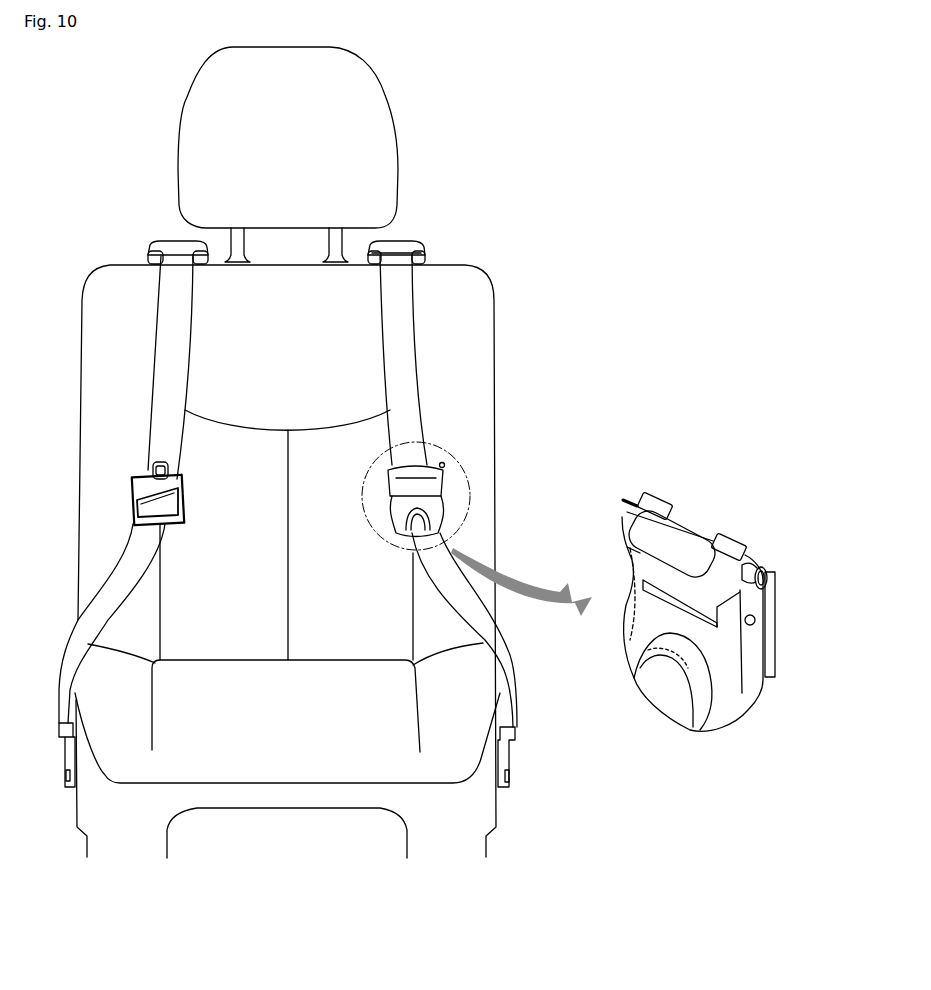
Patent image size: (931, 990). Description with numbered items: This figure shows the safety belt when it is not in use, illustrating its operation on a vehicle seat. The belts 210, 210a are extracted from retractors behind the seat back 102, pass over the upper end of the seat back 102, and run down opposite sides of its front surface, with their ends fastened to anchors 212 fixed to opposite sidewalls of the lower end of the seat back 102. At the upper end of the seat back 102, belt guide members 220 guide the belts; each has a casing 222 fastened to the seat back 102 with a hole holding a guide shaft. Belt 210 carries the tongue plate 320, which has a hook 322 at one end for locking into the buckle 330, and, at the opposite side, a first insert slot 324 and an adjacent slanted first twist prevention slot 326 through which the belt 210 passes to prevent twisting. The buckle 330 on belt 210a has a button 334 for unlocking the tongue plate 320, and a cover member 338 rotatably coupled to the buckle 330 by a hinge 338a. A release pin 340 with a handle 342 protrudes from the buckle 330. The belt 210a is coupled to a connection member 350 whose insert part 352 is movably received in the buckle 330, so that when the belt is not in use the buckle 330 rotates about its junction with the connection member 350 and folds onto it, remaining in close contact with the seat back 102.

The seat back 102 is at (480, 378).
The belt 210 is at (165, 335).
The belt 210a is at (402, 335).
The anchor 212 is at (505, 752).
The belt guide member 220 is at (400, 239).
The casing 222 is at (410, 246).
The tongue plate 320 is at (133, 507).
The hook 322 is at (152, 468).
The first insert slot 324 is at (155, 525).
The first twist prevention slot 326 is at (148, 490).
The buckle 330 is at (440, 500).
The button 334 is at (438, 518).
The cover member 338 is at (442, 475).
The hinge 338a is at (756, 624).
The release pin 340 is at (690, 532).
The handle 342 is at (768, 578).
The connection member 350 is at (776, 660).
The insert part 352 is at (628, 610).